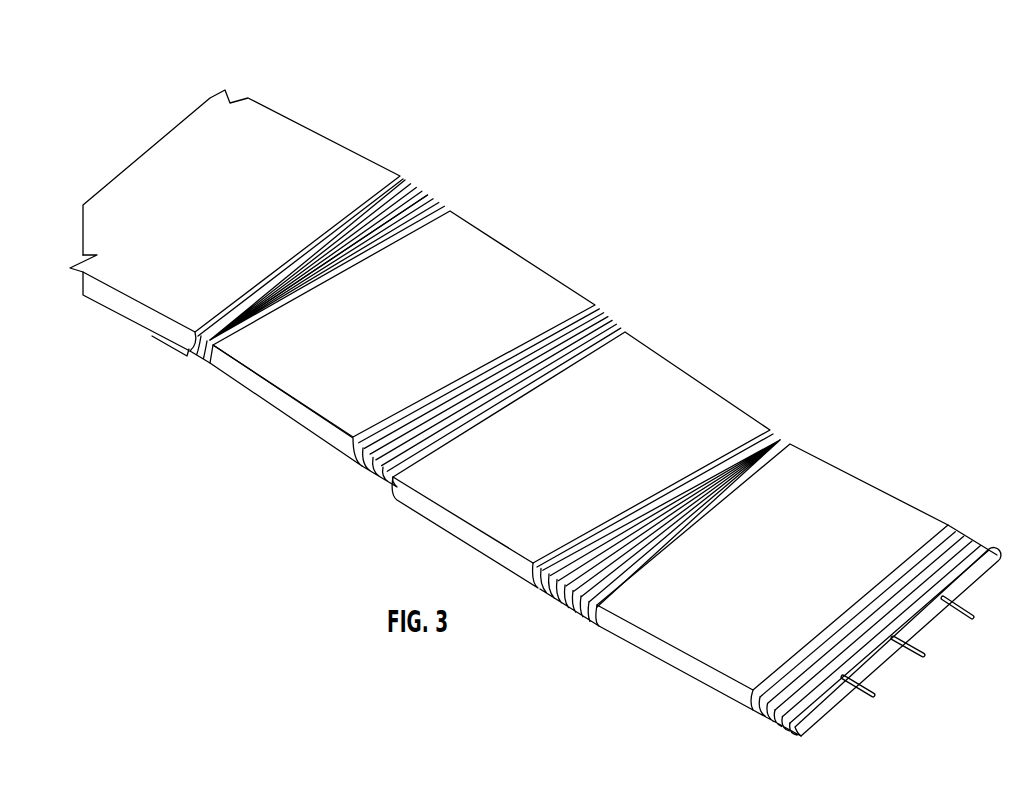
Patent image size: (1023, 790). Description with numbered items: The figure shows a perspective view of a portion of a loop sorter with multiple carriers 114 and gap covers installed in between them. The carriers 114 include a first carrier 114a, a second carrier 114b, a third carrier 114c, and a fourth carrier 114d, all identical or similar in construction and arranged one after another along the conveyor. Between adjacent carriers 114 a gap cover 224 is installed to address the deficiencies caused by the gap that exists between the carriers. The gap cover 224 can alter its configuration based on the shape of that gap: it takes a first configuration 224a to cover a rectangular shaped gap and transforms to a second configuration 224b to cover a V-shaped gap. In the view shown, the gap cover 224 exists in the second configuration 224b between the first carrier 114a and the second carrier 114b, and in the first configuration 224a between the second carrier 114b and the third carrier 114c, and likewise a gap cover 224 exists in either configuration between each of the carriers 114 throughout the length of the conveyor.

The carriers 114 is at (535, 394).
The first carrier 114a is at (253, 229).
The second carrier 114b is at (433, 337).
The third carrier 114c is at (597, 479).
The fourth carrier 114d is at (778, 594).
The gap cover 224 is at (350, 232).
The first configuration 224a is at (632, 336).
The second configuration 224b is at (444, 199).